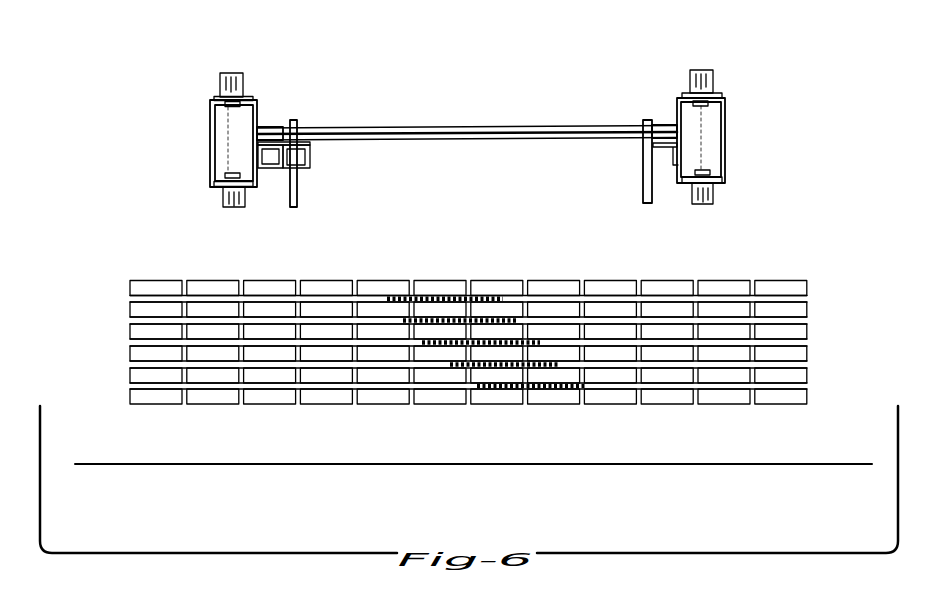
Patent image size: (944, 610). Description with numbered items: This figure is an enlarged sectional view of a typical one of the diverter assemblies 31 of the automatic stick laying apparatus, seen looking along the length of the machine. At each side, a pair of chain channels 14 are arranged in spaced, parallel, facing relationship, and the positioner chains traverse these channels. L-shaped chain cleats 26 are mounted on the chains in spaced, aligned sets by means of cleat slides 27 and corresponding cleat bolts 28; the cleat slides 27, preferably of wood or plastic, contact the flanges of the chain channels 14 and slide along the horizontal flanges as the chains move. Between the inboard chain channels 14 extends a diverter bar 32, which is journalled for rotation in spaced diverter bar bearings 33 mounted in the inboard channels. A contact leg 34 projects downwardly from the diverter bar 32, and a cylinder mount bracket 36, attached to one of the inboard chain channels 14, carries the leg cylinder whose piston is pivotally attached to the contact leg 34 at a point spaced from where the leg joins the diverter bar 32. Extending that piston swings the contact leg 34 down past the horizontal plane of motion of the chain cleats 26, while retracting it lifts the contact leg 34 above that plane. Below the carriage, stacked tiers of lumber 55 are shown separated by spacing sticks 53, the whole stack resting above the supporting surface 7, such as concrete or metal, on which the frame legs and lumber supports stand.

The supporting surface 7 is at (692, 464).
The chain channels 14 is at (210, 112).
The chain cleats 26 is at (245, 84).
The cleat slides 27 is at (221, 97).
The cleat bolts 28 is at (232, 173).
The diverter assemblies 31 is at (293, 204).
The diverter bar 32 is at (497, 125).
The diverter bar bearings 33 is at (275, 128).
The contact leg 34 is at (298, 190).
The cylinder mount bracket 36 is at (312, 155).
The spacing sticks 53 is at (610, 320).
The lumber 55 is at (375, 285).